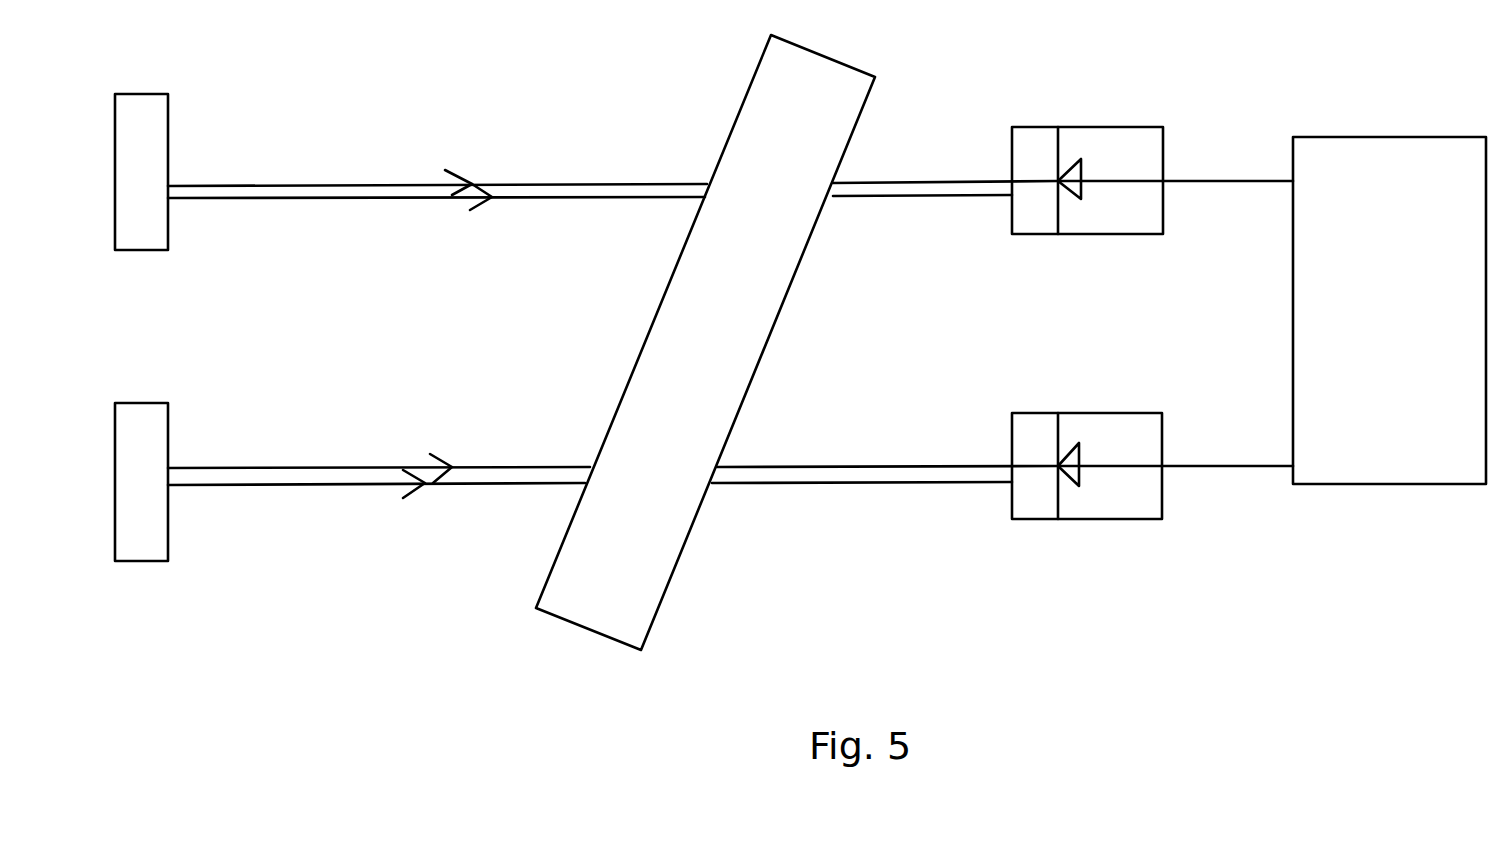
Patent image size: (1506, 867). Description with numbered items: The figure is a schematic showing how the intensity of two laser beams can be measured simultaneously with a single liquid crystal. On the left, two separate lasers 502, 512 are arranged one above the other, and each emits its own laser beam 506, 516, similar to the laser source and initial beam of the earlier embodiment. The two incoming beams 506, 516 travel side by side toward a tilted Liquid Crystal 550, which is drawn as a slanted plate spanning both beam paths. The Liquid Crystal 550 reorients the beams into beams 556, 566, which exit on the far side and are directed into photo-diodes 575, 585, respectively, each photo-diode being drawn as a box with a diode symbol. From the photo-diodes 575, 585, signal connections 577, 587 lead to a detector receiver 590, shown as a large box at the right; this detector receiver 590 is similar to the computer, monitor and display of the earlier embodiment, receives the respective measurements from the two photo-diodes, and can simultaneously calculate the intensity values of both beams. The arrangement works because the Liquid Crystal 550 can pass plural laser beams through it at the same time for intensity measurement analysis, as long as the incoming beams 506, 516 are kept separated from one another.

The laser 502 is at (143, 237).
The laser beam 506 is at (343, 185).
The laser 512 is at (145, 550).
The laser beam 516 is at (306, 473).
The liquid crystal 550 is at (768, 333).
The beam 556 is at (945, 187).
The beam 566 is at (838, 475).
The photo-diode 575 is at (1116, 222).
The first detector output signal 577 is at (1237, 180).
The photo-diode 585 is at (1109, 506).
The second detector output signal 587 is at (1241, 467).
The detector receiver 590 is at (1403, 470).